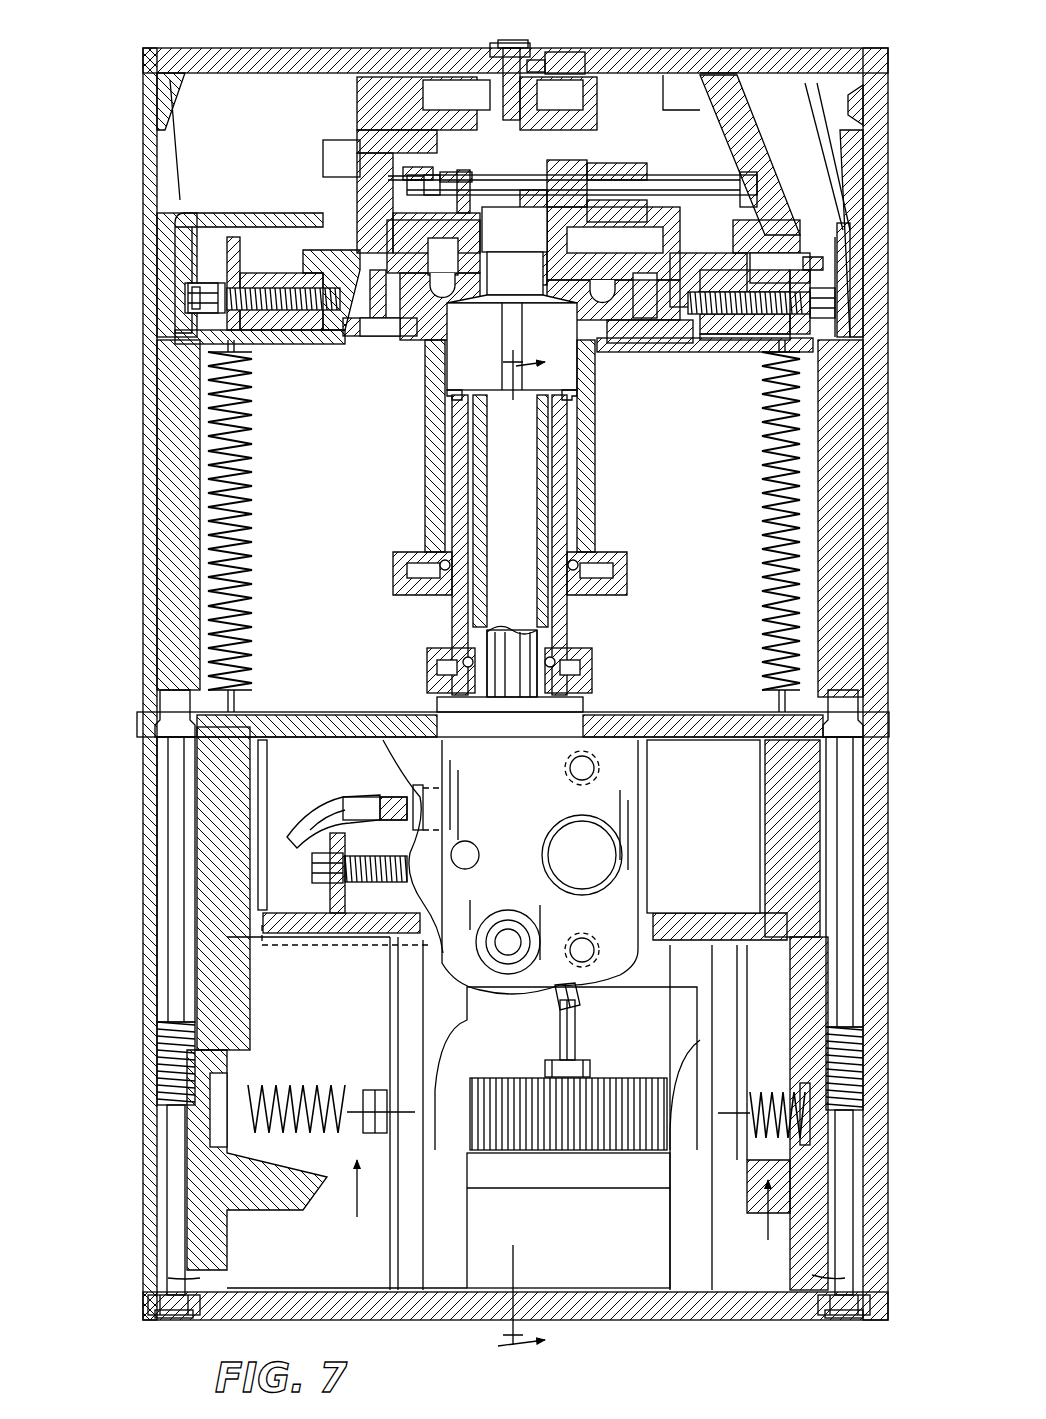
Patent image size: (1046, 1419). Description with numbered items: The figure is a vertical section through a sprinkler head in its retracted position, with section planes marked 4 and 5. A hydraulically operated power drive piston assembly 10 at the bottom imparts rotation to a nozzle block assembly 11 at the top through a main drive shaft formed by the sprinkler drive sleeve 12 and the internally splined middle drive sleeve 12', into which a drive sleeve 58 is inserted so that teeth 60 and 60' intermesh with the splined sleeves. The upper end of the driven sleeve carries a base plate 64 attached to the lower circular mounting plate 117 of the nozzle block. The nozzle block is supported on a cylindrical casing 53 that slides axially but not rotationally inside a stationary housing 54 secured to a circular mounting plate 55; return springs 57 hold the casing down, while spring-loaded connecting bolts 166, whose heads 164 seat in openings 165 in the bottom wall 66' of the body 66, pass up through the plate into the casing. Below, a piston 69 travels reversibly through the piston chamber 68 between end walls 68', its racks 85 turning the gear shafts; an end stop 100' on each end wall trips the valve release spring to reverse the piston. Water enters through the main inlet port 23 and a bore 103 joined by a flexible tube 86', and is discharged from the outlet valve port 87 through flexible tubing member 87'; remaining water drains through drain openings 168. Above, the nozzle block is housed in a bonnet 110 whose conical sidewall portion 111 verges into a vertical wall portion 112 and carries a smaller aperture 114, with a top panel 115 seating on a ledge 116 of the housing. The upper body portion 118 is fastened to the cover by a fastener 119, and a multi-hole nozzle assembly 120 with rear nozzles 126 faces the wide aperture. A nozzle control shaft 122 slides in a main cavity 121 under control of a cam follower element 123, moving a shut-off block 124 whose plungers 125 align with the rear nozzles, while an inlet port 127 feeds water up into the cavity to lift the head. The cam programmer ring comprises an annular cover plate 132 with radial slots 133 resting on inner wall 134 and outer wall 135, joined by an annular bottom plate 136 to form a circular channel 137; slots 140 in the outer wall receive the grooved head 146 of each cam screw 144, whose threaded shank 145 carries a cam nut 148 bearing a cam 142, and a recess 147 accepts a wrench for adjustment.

The power drive piston assembly 10 is at (385, 1075).
The nozzle block assembly 11 is at (228, 95).
The sprinkler drive sleeve 12 is at (485, 446).
The middle drive sleeve 12' is at (547, 545).
The main inlet port 23 is at (625, 855).
The casing 53 is at (160, 398).
The housing 54 is at (145, 490).
The mounting plate 55 is at (715, 715).
The return springs 57 is at (250, 463).
The drive sleeve 58 is at (475, 628).
The teeth 60 is at (474, 364).
The teeth 60' is at (605, 411).
The base plate 64 is at (625, 352).
The body 66 is at (254, 1113).
The bottom wall 66' is at (349, 1319).
The piston chamber 68 is at (784, 992).
The end walls 68' is at (554, 1008).
The piston 69 is at (738, 1058).
The racks 85 is at (550, 1152).
The flexible tube 86' is at (346, 853).
The outlet valve port 87 is at (588, 1038).
The flexible tubing member 87' is at (594, 998).
The end stop 100' is at (279, 1229).
The bore 103 is at (413, 790).
The bonnet 110 is at (858, 233).
The conical sidewall portion 111 is at (840, 185).
The vertical wall portion 112 is at (840, 262).
The smaller aperture 114 is at (820, 145).
The top panel 115 is at (770, 70).
The ledge 116 is at (855, 85).
The lower circular mounting plate 117 is at (585, 252).
The upper body portion 118 is at (560, 145).
The fastener 119 is at (505, 42).
The multi-hole nozzle assembly 120 is at (323, 160).
The main cavity 121 is at (530, 110).
The nozzle control shaft 122 is at (665, 185).
The cam follower element 123 is at (715, 80).
The shut-off block 124 is at (465, 162).
The plungers 125 is at (395, 178).
The rear nozzles 126 is at (410, 170).
The inlet port 127 is at (546, 250).
The annular cover plate 132 is at (180, 258).
The radial slots 133 is at (780, 250).
The inner wall 134 is at (340, 340).
The outer wall 135 is at (810, 320).
The annular bottom plate 136 is at (720, 340).
The circular channel 137 is at (740, 338).
The slots 140 is at (196, 290).
The cams 142 is at (755, 245).
The cam screw 144 is at (240, 275).
The threaded shank 145 is at (285, 315).
The grooved head 146 is at (185, 338).
The recess 147 is at (186, 296).
The cam nut 148 is at (700, 350).
The heads 164 is at (160, 1318).
The openings 165 is at (185, 1318).
The spring-loaded connecting bolts 166 is at (165, 1130).
The drain openings 168 is at (170, 1283).
The section line 4 is at (539, 854).
The section line 5 is at (557, 1215).